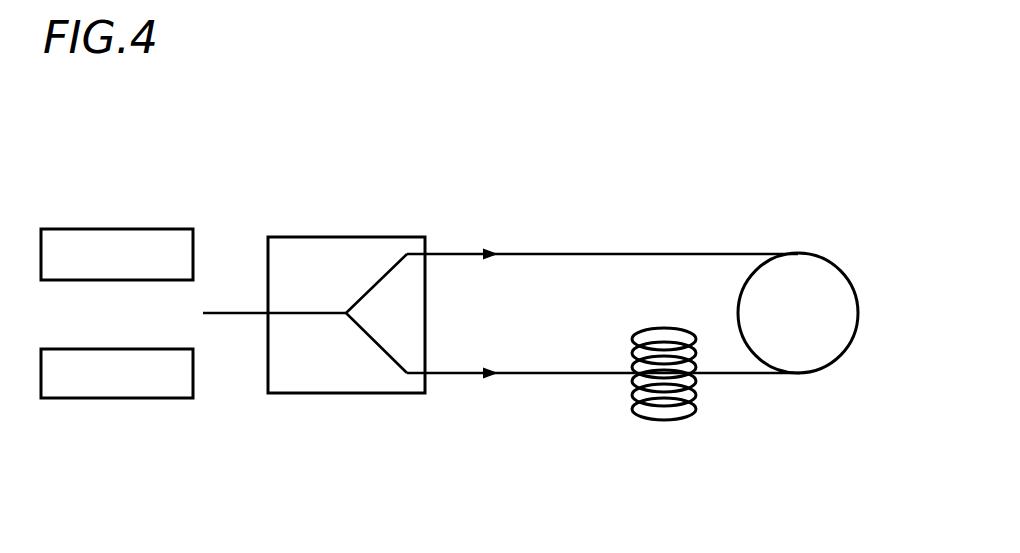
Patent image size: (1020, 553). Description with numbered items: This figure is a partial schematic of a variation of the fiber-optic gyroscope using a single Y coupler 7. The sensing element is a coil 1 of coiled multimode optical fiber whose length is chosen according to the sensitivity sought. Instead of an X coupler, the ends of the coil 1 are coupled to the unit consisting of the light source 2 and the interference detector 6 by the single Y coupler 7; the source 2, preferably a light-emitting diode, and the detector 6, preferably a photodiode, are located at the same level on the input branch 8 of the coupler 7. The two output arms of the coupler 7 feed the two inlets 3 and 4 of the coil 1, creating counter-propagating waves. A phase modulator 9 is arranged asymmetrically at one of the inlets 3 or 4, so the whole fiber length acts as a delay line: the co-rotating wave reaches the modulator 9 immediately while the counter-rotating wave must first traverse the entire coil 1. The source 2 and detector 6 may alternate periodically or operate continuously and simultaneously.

The coil 1 is at (845, 313).
The source 2 is at (129, 254).
The inlet 3 is at (602, 235).
The inlet 4 is at (603, 355).
The interference detector 6 is at (129, 373).
The Y coupler 7 is at (346, 290).
The input branch 8 is at (274, 296).
The optical signal modulator 9 is at (701, 410).